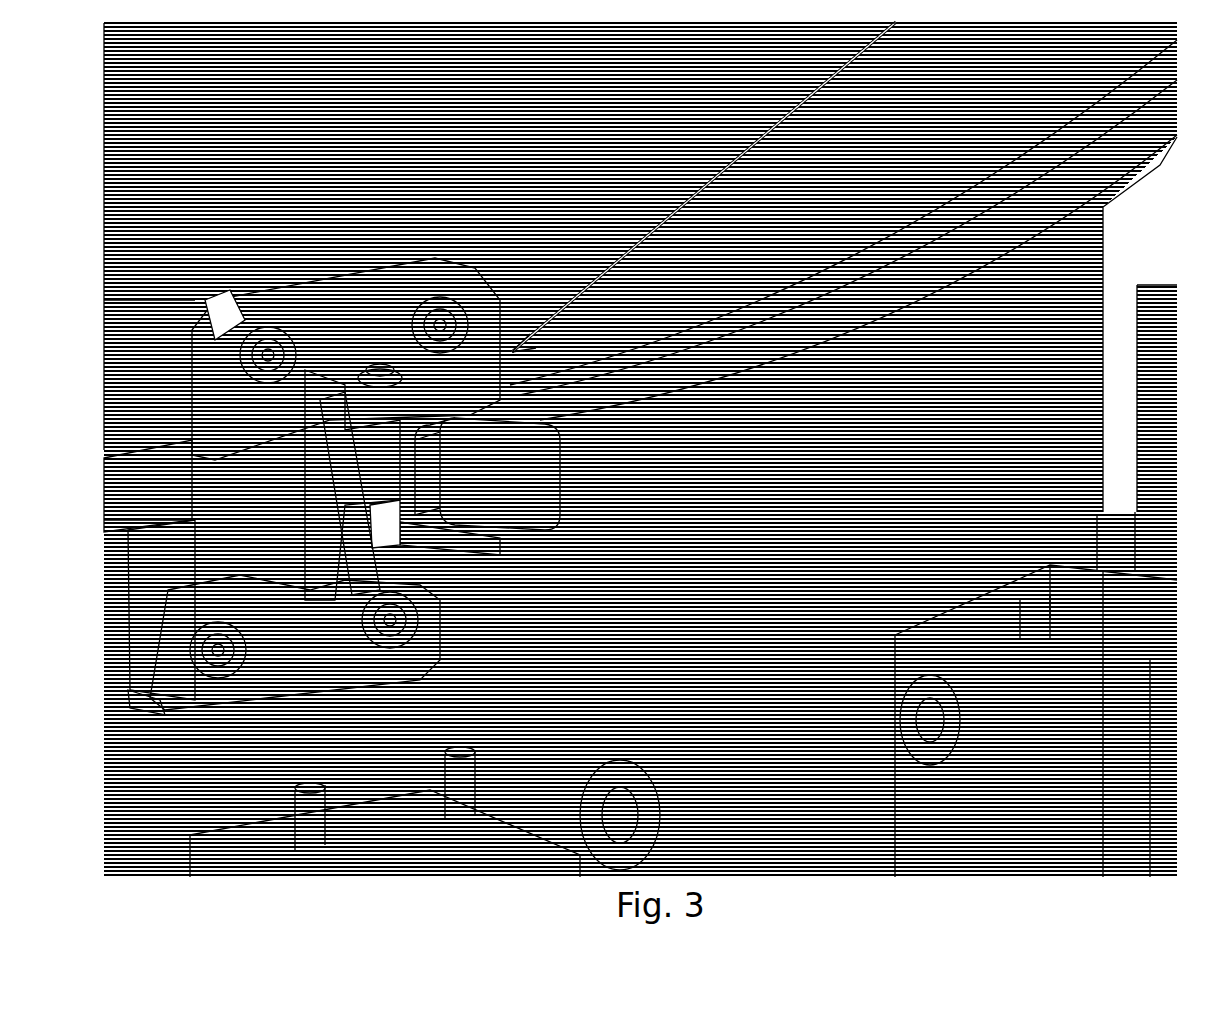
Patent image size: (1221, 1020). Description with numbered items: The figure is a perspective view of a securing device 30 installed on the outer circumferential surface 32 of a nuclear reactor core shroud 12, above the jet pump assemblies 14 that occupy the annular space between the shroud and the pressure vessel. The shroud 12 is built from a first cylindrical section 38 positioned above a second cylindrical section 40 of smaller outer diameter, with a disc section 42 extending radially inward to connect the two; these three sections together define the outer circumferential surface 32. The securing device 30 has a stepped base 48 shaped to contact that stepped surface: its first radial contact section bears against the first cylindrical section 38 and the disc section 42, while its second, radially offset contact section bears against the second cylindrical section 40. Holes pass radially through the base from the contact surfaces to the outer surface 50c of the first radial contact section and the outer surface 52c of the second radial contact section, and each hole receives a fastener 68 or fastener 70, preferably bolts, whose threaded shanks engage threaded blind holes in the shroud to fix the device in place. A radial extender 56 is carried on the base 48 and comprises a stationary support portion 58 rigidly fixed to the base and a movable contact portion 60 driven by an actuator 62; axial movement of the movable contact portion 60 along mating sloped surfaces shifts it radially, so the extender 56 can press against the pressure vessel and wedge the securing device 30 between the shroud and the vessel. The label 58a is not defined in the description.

The shroud 12 is at (1137, 232).
The jet pump assemblies 14 is at (512, 752).
The securing device 30 is at (716, 176).
The outer circumferential surface 32 is at (287, 164).
The first cylindrical section 38 is at (149, 382).
The second cylindrical section 40 is at (165, 700).
The disc section 42 is at (148, 486).
The stepped base 48 is at (150, 710).
The outer surface of first radial contact section 50c is at (350, 310).
The outer surface of second radial contact section 52c is at (300, 682).
The radial extender 56 is at (330, 600).
The stationary support portion 58 is at (312, 556).
The arm portion 58a is at (515, 520).
The movable contact portion 60 is at (565, 490).
The actuator 62 is at (379, 360).
The fastener 68 is at (276, 328).
The fastener 70 is at (240, 676).